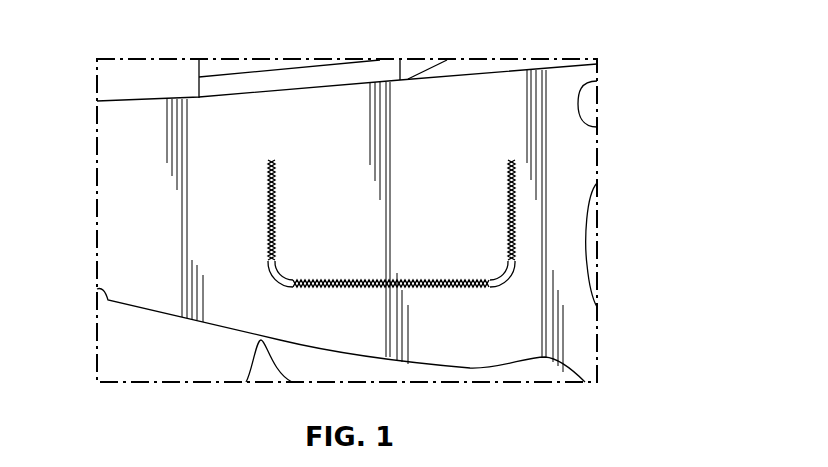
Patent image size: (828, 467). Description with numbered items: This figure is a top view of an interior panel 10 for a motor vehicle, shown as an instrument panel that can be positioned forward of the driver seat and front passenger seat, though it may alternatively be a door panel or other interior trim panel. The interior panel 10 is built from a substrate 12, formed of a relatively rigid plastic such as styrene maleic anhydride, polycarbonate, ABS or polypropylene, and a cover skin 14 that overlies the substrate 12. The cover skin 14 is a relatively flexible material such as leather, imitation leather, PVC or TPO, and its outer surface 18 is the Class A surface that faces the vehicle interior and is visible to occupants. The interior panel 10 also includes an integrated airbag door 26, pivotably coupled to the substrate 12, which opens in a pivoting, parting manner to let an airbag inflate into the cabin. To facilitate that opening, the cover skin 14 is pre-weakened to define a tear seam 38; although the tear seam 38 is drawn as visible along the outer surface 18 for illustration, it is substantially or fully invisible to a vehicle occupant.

The interior panel 10 is at (581, 40).
The substrate 12 is at (105, 343).
The cover skin 14 is at (575, 332).
The outer surface 18 is at (578, 261).
The integrated airbag door 26 is at (438, 284).
The tear seam 38 is at (482, 288).